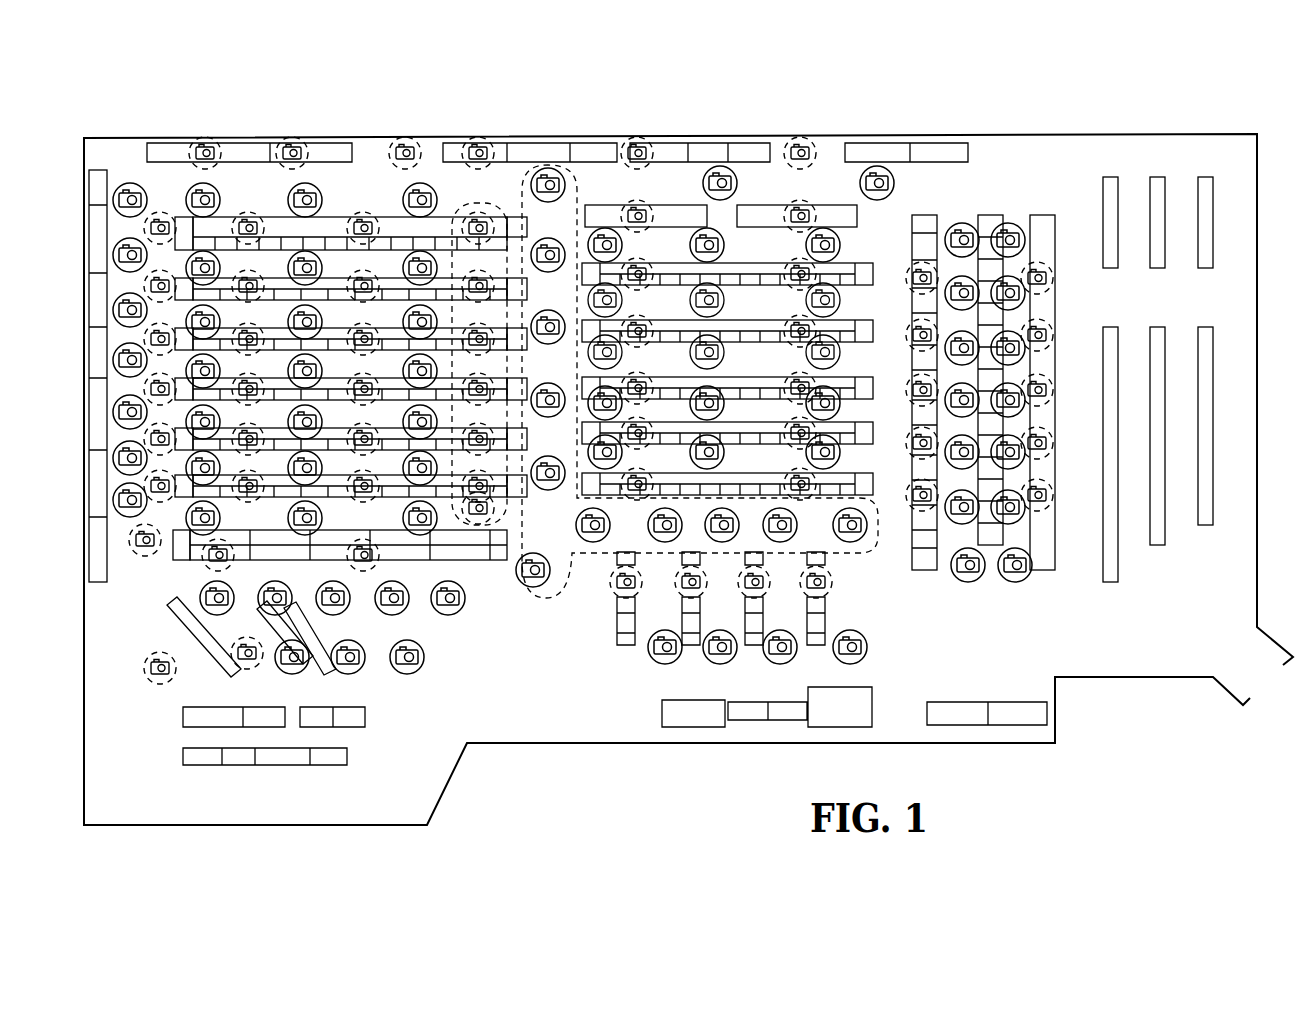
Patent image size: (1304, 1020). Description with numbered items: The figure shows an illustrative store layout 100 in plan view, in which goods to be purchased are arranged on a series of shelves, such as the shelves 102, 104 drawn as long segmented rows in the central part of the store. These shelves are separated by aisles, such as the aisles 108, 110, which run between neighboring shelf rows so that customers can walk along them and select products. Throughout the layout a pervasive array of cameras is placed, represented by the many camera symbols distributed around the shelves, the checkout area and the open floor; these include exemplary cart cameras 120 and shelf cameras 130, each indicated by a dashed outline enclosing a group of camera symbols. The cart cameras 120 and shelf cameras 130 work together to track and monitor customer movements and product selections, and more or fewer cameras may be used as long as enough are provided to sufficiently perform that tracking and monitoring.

The store layout 100 is at (1074, 86).
The shelf 102 is at (846, 262).
The shelf 104 is at (845, 318).
The aisle 108 is at (772, 311).
The aisle 110 is at (772, 366).
The cart cameras 120 is at (577, 177).
The shelf cameras 130 is at (457, 208).